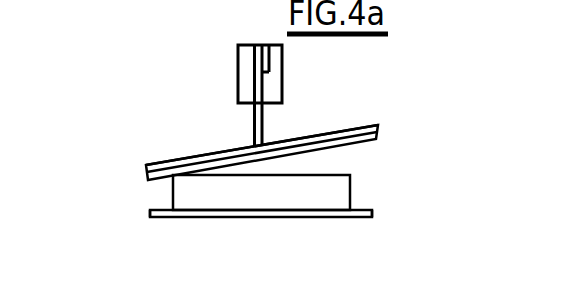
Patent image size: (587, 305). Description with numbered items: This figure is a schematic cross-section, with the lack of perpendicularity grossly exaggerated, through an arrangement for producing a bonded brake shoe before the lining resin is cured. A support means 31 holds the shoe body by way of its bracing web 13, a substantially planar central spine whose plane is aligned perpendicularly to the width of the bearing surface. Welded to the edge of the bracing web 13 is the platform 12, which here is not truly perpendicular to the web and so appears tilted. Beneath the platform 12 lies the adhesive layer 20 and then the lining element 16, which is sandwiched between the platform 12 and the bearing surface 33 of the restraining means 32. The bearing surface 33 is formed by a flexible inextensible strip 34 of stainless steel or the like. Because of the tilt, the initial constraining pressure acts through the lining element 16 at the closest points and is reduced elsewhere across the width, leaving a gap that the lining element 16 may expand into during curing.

The platform 12 is at (178, 159).
The bracing web 13 is at (254, 122).
The lining element 16 is at (353, 185).
The adhesive layer 20 is at (378, 141).
The support means 31 is at (283, 72).
The restraining means 32 is at (140, 203).
The bearing surface 33 is at (367, 212).
The flexible inextensible strip 34 is at (170, 218).